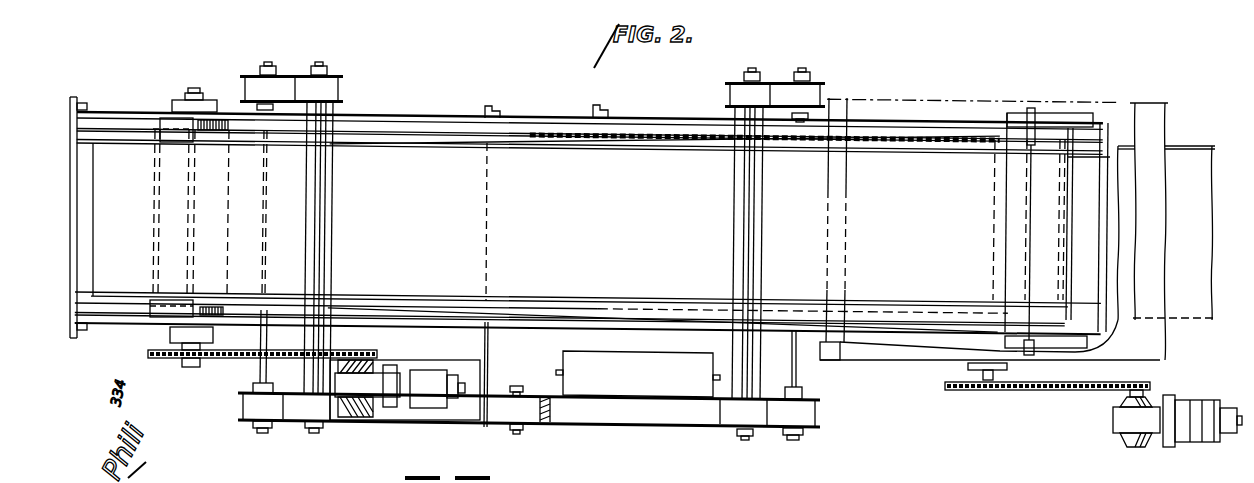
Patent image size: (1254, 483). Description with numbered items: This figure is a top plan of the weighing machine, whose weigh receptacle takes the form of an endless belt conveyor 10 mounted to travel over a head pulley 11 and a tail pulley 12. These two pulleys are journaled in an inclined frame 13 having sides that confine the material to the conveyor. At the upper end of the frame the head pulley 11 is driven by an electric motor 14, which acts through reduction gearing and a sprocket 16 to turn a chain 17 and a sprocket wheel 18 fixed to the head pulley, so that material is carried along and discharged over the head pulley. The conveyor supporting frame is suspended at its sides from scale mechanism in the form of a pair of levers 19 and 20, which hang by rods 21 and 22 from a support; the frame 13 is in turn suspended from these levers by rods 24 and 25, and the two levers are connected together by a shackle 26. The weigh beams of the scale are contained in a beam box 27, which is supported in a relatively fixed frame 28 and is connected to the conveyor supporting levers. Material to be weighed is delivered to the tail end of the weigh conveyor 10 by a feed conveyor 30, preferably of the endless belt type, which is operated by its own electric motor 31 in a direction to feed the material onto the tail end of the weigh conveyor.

The endless belt conveyor 10 is at (664, 230).
The head pulley 11 is at (150, 327).
The tail pulley 12 is at (992, 200).
The inclined frame 13 is at (540, 117).
The electric motor 14 is at (428, 405).
The sprocket 16 is at (372, 355).
The chain 17 is at (232, 358).
The sprocket wheel 18 is at (163, 360).
The lever 19 is at (487, 420).
The lever 20 is at (650, 418).
The rod 21 is at (323, 72).
The rod 22 is at (744, 75).
The rod 24 is at (253, 429).
The rod 25 is at (812, 81).
The shackle 26 is at (522, 433).
The beam box 27 is at (641, 374).
The fixed frame 28 is at (558, 373).
The feed conveyor 30 is at (1195, 163).
The electric motor 31 is at (1208, 437).